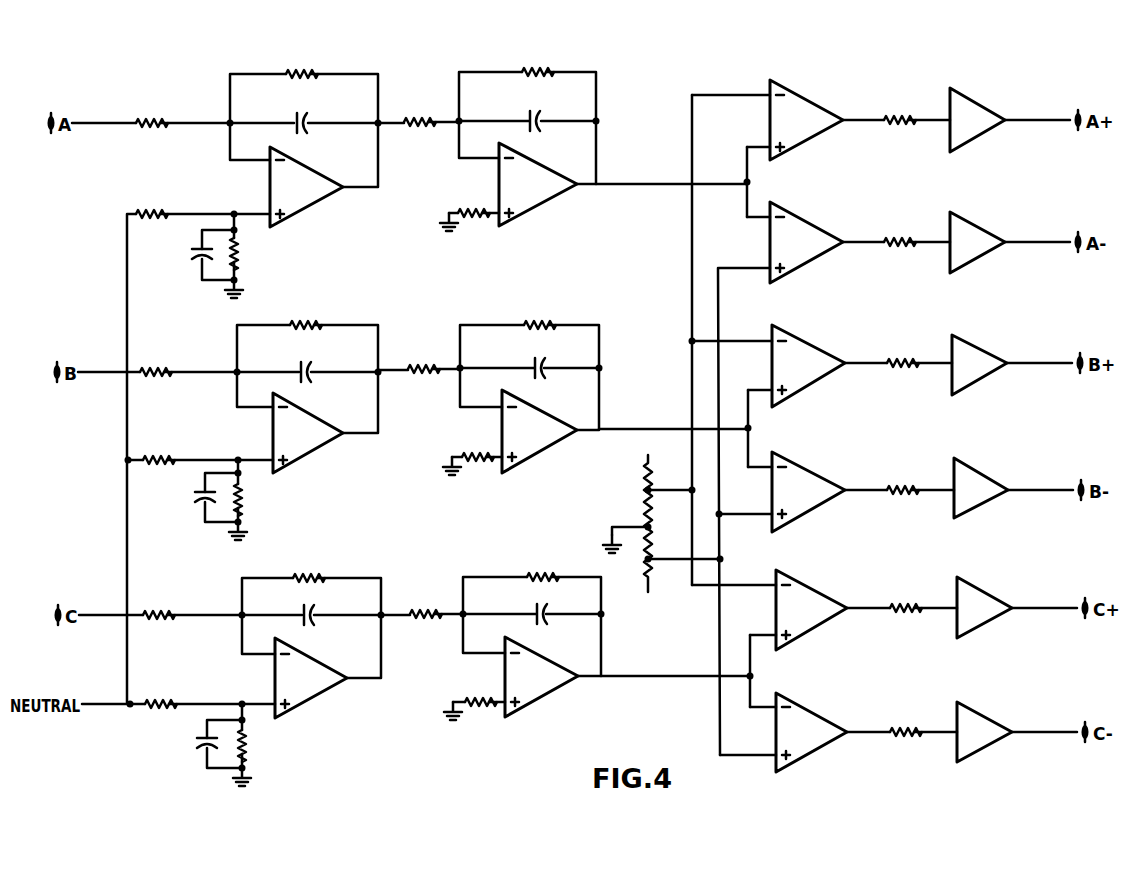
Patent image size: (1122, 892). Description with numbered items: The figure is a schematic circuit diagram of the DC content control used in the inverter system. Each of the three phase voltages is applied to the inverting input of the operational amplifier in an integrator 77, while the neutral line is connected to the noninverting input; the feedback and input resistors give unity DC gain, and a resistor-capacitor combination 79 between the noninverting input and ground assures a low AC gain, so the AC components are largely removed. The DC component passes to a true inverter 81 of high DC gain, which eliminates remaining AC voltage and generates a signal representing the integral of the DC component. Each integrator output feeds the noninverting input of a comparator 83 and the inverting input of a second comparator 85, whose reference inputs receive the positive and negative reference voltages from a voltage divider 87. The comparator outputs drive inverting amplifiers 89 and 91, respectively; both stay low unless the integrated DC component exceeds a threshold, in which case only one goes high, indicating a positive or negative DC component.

The integrator 77 is at (342, 228).
The RC network at non-inverting input 79 is at (182, 263).
The true inverter 81 is at (573, 226).
The comparator 83 is at (807, 97).
The second comparator 85 is at (807, 227).
The voltage divider 87 is at (625, 517).
The inverting amplifier 89 is at (982, 104).
The inverting amplifier 91 is at (982, 225).